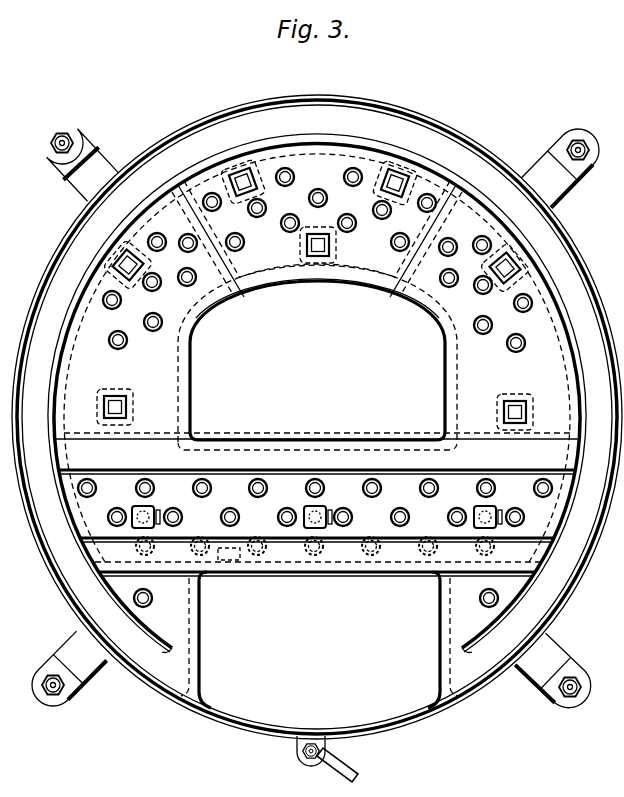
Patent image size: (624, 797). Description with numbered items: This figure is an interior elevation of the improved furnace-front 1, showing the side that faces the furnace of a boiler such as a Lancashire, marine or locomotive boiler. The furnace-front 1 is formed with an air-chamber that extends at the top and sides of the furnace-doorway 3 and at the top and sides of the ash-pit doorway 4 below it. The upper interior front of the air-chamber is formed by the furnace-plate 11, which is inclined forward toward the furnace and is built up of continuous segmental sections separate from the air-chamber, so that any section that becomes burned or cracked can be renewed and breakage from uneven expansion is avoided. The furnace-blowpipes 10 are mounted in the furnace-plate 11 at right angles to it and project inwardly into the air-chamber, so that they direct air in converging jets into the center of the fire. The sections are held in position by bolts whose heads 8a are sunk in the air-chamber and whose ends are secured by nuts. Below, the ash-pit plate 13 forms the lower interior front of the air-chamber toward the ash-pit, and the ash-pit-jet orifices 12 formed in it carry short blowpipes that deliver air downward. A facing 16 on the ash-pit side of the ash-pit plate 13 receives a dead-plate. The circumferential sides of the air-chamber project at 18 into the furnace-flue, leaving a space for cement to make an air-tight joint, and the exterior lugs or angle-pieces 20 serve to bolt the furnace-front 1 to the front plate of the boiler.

The furnace-front 1 is at (317, 417).
The furnace-doorway 3 is at (317, 357).
The ash-pit doorway 4 is at (317, 640).
The heads of the bolts 8a is at (141, 266).
The furnace-blowpipes 10 is at (302, 174).
The furnace-plate 11 is at (142, 368).
The ash-pit-jet orifices 12 is at (135, 488).
The ash-pit plate 13 is at (317, 534).
The facing 16 is at (317, 456).
The projecting circumferential sides of the air-chamber 18 is at (578, 458).
The exterior lugs or angle-pieces 20 is at (66, 170).